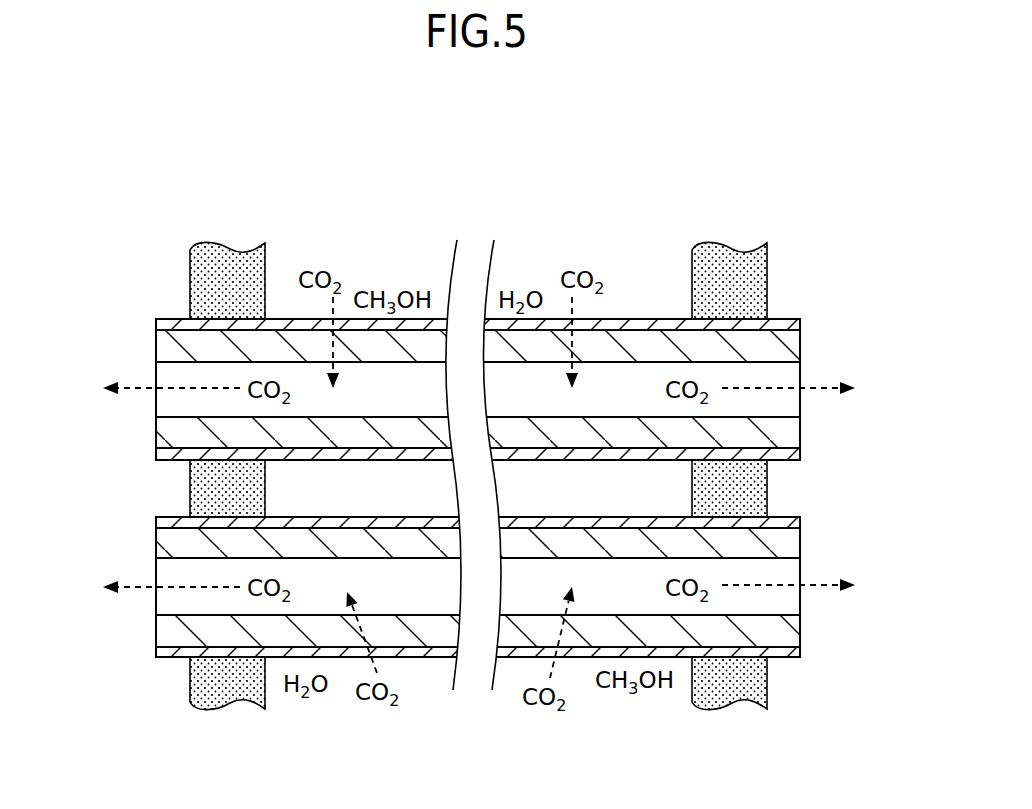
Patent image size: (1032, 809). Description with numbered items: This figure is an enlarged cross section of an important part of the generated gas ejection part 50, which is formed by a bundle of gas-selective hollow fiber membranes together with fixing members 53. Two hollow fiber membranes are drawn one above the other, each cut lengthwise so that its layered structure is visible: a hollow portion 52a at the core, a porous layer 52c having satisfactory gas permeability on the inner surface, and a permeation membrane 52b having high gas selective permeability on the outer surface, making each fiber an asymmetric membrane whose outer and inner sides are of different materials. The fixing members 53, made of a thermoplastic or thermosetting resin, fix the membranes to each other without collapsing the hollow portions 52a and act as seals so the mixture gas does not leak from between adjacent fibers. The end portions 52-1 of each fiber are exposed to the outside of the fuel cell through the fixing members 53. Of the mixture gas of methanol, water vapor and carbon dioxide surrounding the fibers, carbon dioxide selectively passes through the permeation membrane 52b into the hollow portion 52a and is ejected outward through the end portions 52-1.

The generated gas ejection part 50 is at (97, 162).
The end portion 52-1 is at (142, 603).
The hollow portion 52a is at (170, 400).
The permeation membrane 52b is at (156, 456).
The porous layer 52c is at (166, 432).
The fixing member 53 is at (232, 246).